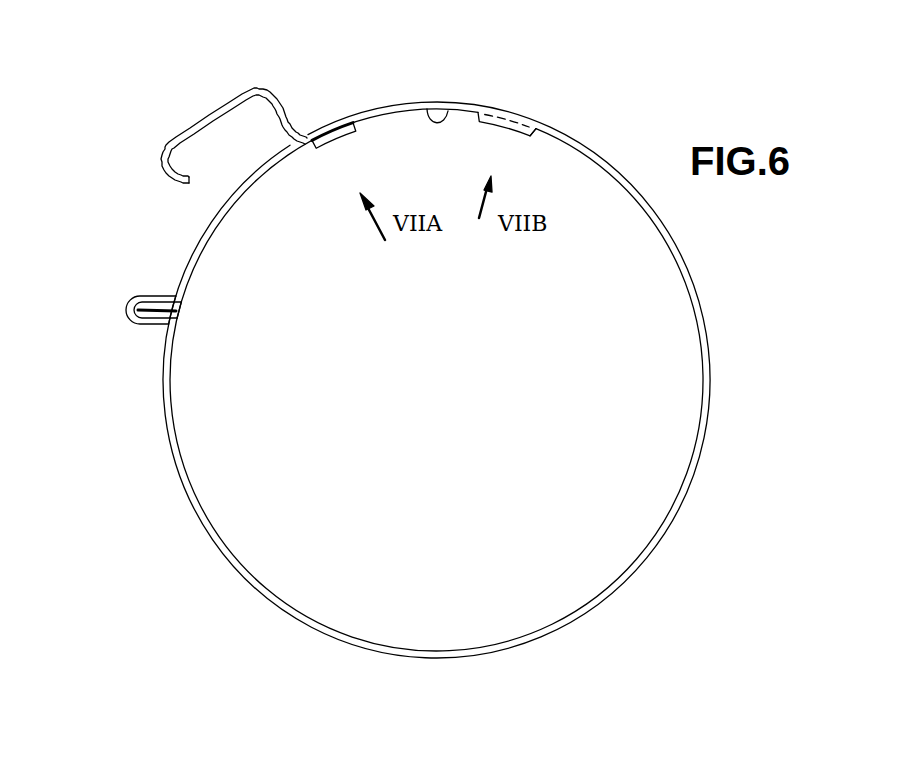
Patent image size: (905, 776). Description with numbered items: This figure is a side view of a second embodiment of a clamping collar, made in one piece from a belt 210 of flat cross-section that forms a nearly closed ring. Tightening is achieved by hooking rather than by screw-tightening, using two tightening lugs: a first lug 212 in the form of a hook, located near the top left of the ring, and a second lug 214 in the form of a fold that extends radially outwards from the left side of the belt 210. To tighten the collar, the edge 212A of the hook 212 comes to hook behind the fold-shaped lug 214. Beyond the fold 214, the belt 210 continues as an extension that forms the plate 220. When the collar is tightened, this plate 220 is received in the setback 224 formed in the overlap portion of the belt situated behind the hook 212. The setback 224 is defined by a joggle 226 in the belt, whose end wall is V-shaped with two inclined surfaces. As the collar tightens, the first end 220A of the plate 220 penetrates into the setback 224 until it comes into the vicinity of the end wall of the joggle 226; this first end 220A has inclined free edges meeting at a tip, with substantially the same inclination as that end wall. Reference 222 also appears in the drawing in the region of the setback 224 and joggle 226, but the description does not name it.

The belt 210 is at (442, 651).
The first lug 212 is at (283, 102).
The edge of the hook 212A is at (188, 188).
The second lug 214 is at (130, 306).
The plate 220 is at (241, 207).
The first end of the plate 220A is at (333, 152).
The pressed section 222 is at (480, 104).
The setback 224 is at (427, 103).
The joggle 226 is at (546, 122).